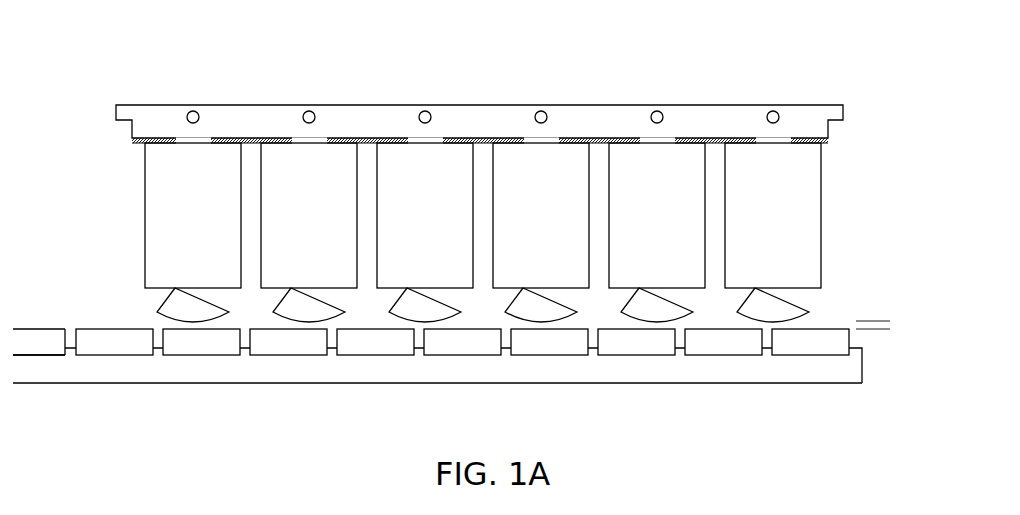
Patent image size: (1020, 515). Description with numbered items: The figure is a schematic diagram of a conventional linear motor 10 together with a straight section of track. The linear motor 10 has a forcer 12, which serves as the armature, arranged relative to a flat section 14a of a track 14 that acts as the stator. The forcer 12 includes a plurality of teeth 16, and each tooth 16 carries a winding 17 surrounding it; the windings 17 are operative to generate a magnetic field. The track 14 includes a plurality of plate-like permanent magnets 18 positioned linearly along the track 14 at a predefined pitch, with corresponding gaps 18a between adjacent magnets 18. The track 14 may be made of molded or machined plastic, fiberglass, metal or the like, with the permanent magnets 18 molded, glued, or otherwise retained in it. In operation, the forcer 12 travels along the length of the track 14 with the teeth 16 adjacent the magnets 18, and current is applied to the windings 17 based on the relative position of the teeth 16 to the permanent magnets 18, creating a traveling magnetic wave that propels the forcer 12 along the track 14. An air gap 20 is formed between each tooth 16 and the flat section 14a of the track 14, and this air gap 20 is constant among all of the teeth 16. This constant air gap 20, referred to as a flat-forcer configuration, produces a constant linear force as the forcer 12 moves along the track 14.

The linear motor 10 is at (828, 62).
The forcer 12 is at (124, 104).
The track 14 is at (568, 392).
The flat section 14a is at (78, 371).
The teeth 16 is at (99, 294).
The winding 17 is at (822, 203).
The permanent magnets 18 is at (76, 328).
The gaps 18a is at (770, 366).
The air gap 20 is at (872, 290).